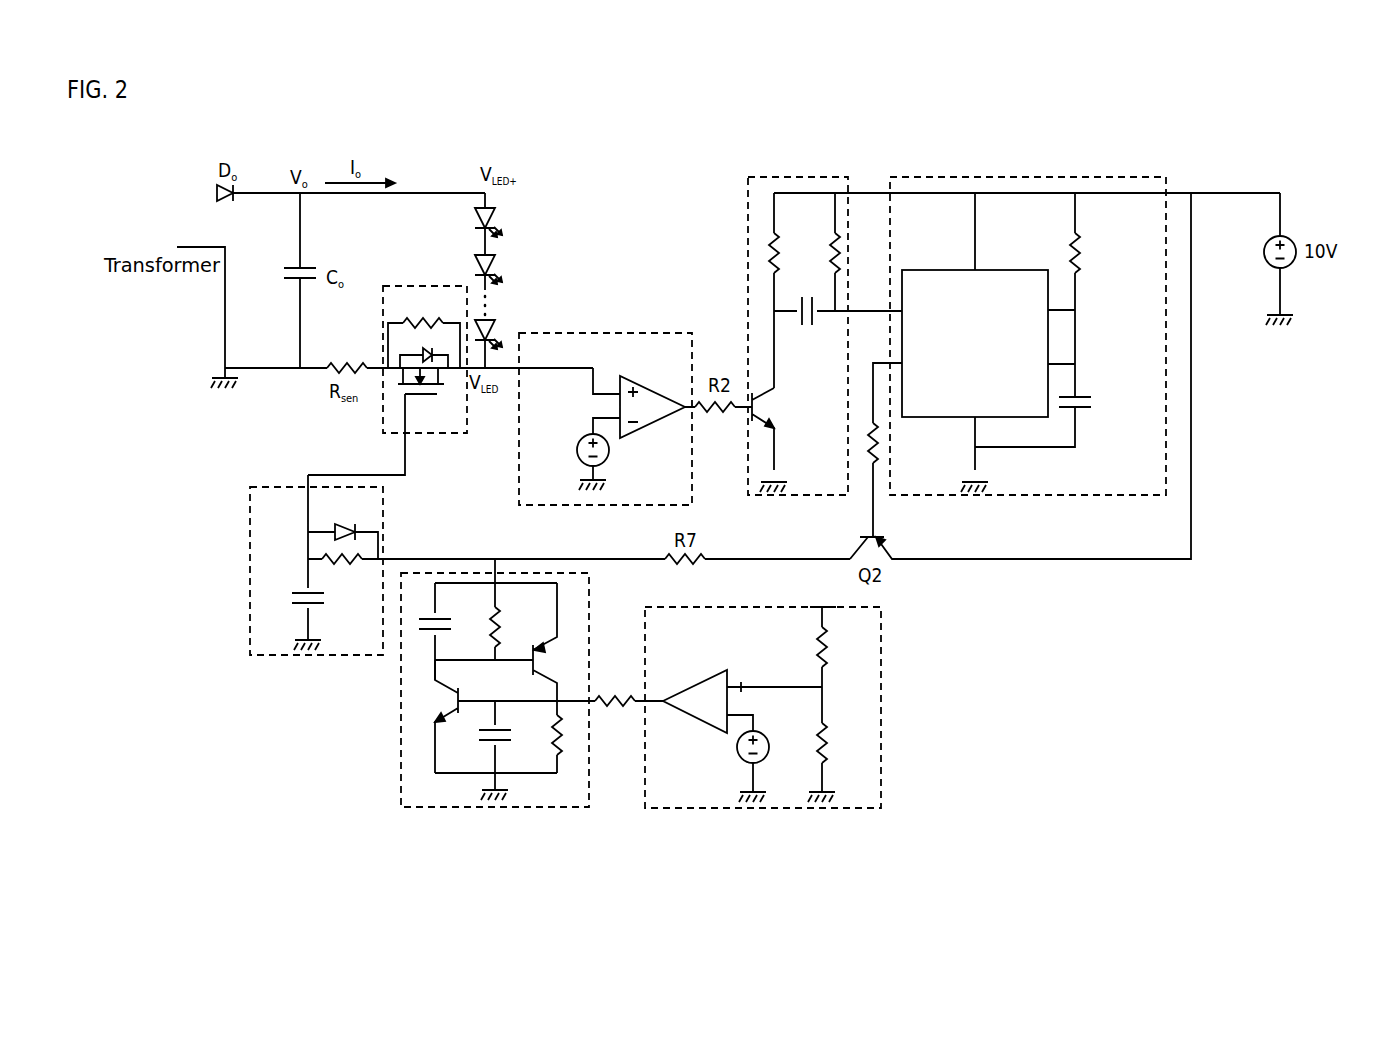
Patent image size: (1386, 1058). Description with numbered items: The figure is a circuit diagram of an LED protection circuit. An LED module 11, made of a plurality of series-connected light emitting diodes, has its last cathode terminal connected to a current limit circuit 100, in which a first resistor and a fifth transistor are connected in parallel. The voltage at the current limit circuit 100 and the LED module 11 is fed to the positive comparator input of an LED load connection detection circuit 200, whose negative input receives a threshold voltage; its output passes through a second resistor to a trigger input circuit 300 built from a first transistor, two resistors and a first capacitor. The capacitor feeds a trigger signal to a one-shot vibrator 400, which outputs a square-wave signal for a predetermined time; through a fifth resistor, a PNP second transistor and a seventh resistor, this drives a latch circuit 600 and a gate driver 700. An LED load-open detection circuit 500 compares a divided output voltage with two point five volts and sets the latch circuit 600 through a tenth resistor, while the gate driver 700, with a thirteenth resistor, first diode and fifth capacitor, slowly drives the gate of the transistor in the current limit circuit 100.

The LED module 11 is at (541, 280).
The current limit circuit 100 is at (442, 434).
The LED load connection detection circuit 200 is at (583, 506).
The trigger input circuit 300 is at (803, 496).
The one-shot vibrator 400 is at (1073, 496).
The LED load-open detection circuit 500 is at (882, 700).
The latch circuit 600 is at (415, 808).
The gate driver 700 is at (270, 656).